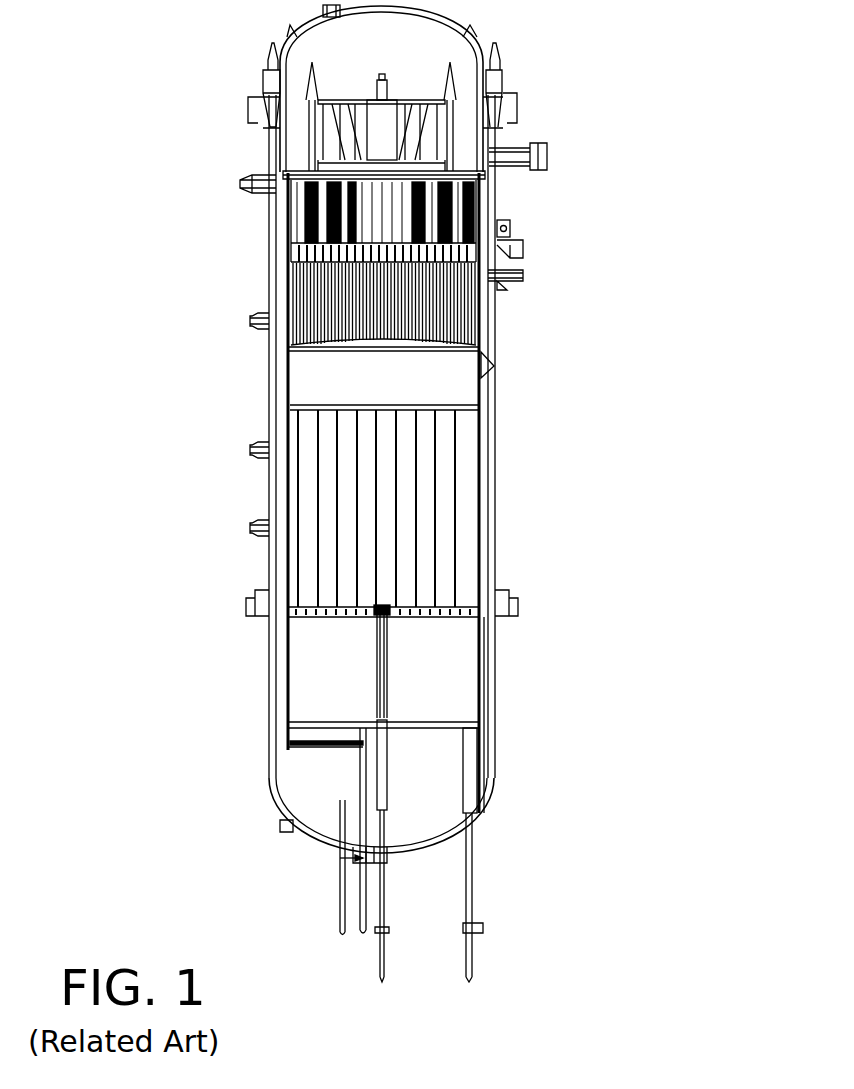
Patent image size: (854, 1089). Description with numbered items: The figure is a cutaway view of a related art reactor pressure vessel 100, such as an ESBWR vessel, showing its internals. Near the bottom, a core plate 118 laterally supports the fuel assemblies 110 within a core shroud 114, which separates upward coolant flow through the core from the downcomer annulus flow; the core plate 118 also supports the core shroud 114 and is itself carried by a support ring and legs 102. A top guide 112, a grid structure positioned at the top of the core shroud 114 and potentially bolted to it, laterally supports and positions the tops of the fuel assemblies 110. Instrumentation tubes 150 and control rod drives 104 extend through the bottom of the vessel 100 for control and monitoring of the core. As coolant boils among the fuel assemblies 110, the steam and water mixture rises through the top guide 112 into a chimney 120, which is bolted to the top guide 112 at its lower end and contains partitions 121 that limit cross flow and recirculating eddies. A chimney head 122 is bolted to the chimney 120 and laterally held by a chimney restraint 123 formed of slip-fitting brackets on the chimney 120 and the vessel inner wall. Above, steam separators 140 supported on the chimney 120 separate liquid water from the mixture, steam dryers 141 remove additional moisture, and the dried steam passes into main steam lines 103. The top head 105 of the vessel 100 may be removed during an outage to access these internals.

The reactor pressure vessel 100 is at (264, 388).
The support ring and legs 102 is at (478, 792).
The main steam lines 103 is at (549, 163).
The control rod drives 104 is at (477, 961).
The top head 105 is at (261, 77).
The fuel assemblies 110 is at (392, 684).
The top guide 112 is at (323, 615).
The core shroud 114 is at (482, 668).
The core plate 118 is at (457, 725).
The chimney 120 is at (480, 482).
The partitions 121 is at (417, 537).
The chimney head 122 is at (484, 346).
The chimney restraint 123 is at (486, 362).
The steam separators 140 is at (345, 297).
The steam dryers 141 is at (308, 136).
The instrumentation tubes 150 is at (357, 788).